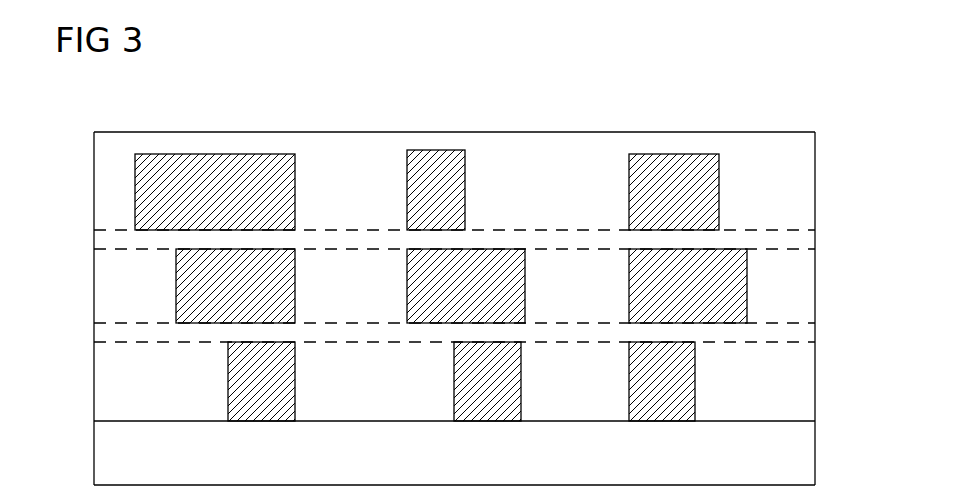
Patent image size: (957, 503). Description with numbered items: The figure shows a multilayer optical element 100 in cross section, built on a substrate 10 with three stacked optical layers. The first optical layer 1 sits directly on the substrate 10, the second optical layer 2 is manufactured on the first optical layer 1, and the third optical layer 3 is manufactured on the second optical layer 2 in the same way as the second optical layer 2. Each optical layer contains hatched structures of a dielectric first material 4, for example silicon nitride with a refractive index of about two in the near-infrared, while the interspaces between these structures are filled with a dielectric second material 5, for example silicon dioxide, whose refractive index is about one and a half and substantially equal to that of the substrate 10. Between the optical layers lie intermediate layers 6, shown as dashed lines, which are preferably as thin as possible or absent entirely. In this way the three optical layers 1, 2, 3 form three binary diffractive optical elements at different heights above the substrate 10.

The multilayer optical element 100 is at (740, 103).
The first optical layer 1 is at (807, 380).
The second optical layer 2 is at (807, 290).
The third optical layer 3 is at (806, 181).
The first material 4 is at (408, 193).
The second material 5 is at (101, 373).
The intermediate layers 6 is at (807, 240).
The substrate 10 is at (807, 453).